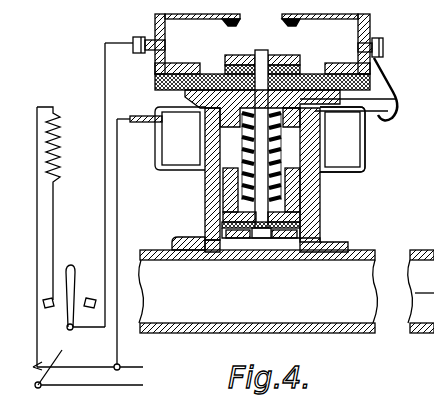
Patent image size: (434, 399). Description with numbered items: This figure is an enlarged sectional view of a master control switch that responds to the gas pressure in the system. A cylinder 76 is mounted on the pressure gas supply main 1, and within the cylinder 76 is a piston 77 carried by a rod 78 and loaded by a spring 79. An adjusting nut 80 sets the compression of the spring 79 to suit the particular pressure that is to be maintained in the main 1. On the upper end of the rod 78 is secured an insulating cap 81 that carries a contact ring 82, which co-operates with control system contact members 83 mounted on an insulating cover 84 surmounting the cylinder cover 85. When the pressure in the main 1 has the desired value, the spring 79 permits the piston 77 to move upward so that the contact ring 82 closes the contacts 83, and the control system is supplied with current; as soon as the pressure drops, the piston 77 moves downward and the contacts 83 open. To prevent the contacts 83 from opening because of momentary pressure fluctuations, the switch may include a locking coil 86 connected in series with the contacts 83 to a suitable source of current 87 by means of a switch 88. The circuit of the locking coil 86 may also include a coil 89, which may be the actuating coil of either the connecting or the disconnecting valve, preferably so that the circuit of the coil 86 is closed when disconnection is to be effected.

The pressure gas supply main 1 is at (310, 333).
The cylinder 76 is at (322, 223).
The piston 77 is at (236, 185).
The rod 78 is at (258, 193).
The spring 79 is at (237, 152).
The adjusting nut 80 is at (253, 55).
The insulating cap 81 is at (303, 66).
The contact ring 82 is at (288, 60).
The control system contact members 83 is at (188, 15).
The insulating cover 84 is at (157, 80).
The cylinder cover 85 is at (395, 103).
The locking coil 86 is at (352, 157).
The source of current 87 is at (51, 366).
The switch 88 is at (72, 266).
The coil 89 is at (62, 203).